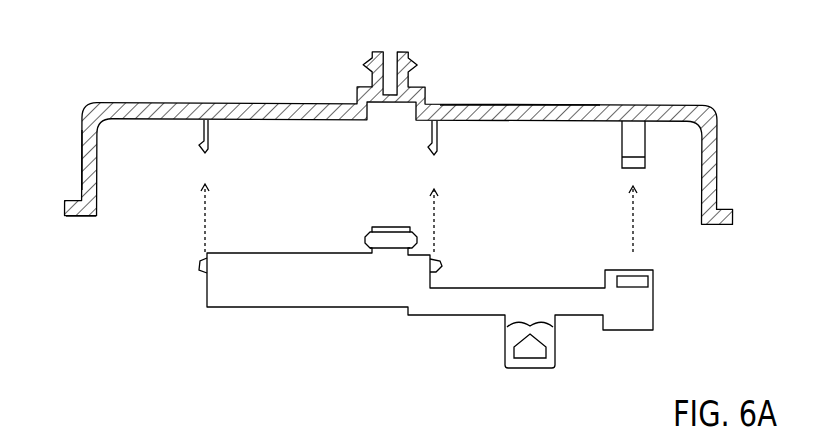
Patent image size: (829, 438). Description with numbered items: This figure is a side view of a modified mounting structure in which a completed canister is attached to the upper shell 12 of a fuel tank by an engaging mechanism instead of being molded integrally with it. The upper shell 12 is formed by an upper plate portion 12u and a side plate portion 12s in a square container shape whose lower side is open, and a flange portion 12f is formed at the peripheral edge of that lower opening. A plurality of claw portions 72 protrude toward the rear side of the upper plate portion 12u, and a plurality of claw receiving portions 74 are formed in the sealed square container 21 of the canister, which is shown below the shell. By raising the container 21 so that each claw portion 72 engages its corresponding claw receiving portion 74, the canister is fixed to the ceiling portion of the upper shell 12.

The upper shell 12 is at (476, 99).
The side plate portion 12s is at (82, 158).
The flange portion 12f is at (80, 219).
The upper plate portion 12u is at (527, 105).
The claw portions 72 is at (211, 131).
The claw receiving portions 74 is at (198, 261).
The square container 21 is at (320, 292).